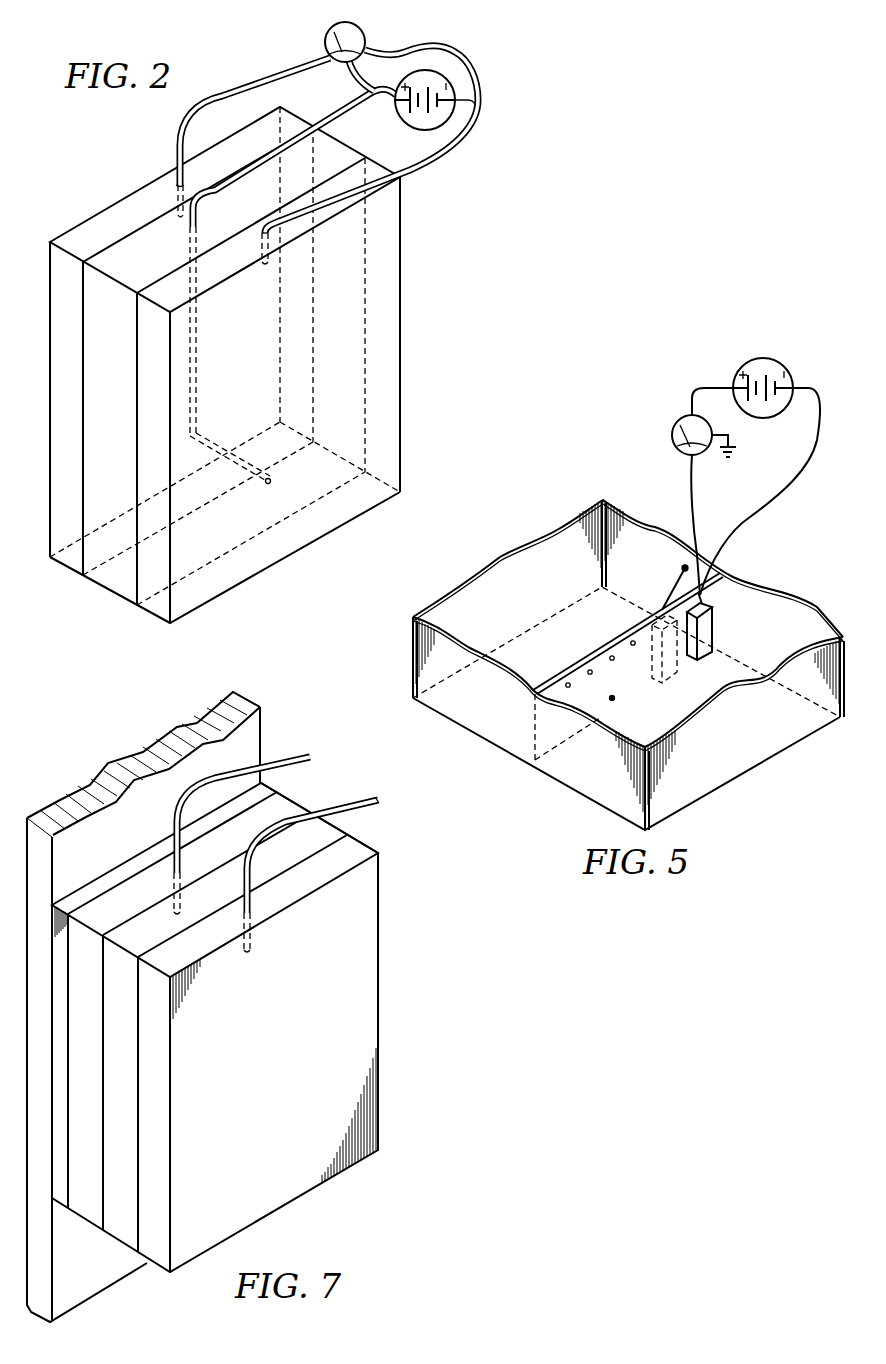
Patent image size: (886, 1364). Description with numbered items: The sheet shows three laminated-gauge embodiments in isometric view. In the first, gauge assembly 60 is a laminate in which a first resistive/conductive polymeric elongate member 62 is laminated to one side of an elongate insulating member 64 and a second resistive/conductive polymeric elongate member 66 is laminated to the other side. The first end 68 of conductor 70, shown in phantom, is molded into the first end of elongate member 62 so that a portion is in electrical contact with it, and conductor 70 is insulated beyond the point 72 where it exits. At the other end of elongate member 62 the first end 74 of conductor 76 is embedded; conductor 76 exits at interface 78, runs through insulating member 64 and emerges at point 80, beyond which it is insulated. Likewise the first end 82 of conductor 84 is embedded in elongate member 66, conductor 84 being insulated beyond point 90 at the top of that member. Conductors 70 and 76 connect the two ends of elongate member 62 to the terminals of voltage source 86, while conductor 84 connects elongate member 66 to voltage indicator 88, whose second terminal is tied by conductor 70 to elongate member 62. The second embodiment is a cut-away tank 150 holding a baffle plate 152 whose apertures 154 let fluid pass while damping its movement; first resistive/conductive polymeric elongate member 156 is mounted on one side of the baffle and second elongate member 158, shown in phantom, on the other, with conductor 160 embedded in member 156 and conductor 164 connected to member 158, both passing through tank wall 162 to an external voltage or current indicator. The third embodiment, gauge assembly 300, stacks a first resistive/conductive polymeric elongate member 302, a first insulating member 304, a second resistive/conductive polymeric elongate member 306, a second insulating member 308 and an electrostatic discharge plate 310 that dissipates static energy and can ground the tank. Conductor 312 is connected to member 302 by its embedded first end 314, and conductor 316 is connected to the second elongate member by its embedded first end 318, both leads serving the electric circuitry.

In FIG. 2, the gauge assembly 60 is at (447, 306).
In FIG. 2, the first resistive/conductive polymeric elongate member 62 is at (383, 500).
In FIG. 2, the elongate insulating member 64 is at (110, 586).
In FIG. 2, the second resistive/conductive polymeric elongate member 66 is at (72, 568).
In FIG. 2, the first end of conductor 70 68 is at (276, 268).
In FIG. 2, the conductor 70 is at (426, 170).
In FIG. 2, the exit point of conductor 70 72 is at (278, 236).
In FIG. 2, the first end of conductor 76 74 is at (260, 490).
In FIG. 2, the conductor 76 is at (347, 113).
In FIG. 2, the interface 78 is at (252, 462).
In FIG. 2, the exit point of conductor 76 80 is at (188, 232).
In FIG. 2, the first end of conductor 84 82 is at (174, 200).
In FIG. 2, the conductor 84 is at (266, 82).
In FIG. 2, the voltage source 86 is at (393, 120).
In FIG. 2, the voltage indicator 88 is at (326, 40).
In FIG. 2, the juncture point 90 is at (173, 178).
In FIG. 5, the tank 150 is at (693, 797).
In FIG. 5, the baffle plate 152 is at (664, 680).
In FIG. 5, the apertures 154 is at (633, 698).
In FIG. 5, the first resistive/conductive polymeric elongate member 156 is at (713, 638).
In FIG. 5, the second resistive/conductive polymeric elongate member 158 is at (640, 617).
In FIG. 5, the conductor 160 is at (716, 599).
In FIG. 5, the tank wall 162 is at (785, 602).
In FIG. 5, the conductor 164 is at (665, 588).
In FIG. 7, the gauge assembly 300 is at (375, 1187).
In FIG. 7, the first resistive/conductive polymeric elongate member 302 is at (379, 1008).
In FIG. 7, the first insulating member 304 is at (343, 815).
In FIG. 7, the second resistive/conductive polymeric elongate member 306 is at (290, 803).
In FIG. 7, the second insulating member 308 is at (123, 870).
In FIG. 7, the electrostatic discharge plate 310 is at (95, 1285).
In FIG. 7, the conductor 312 is at (363, 800).
In FIG. 7, the first end of conductor 312 314 is at (257, 946).
In FIG. 7, the conductor 316 is at (283, 760).
In FIG. 7, the first end of conductor 316 318 is at (172, 880).